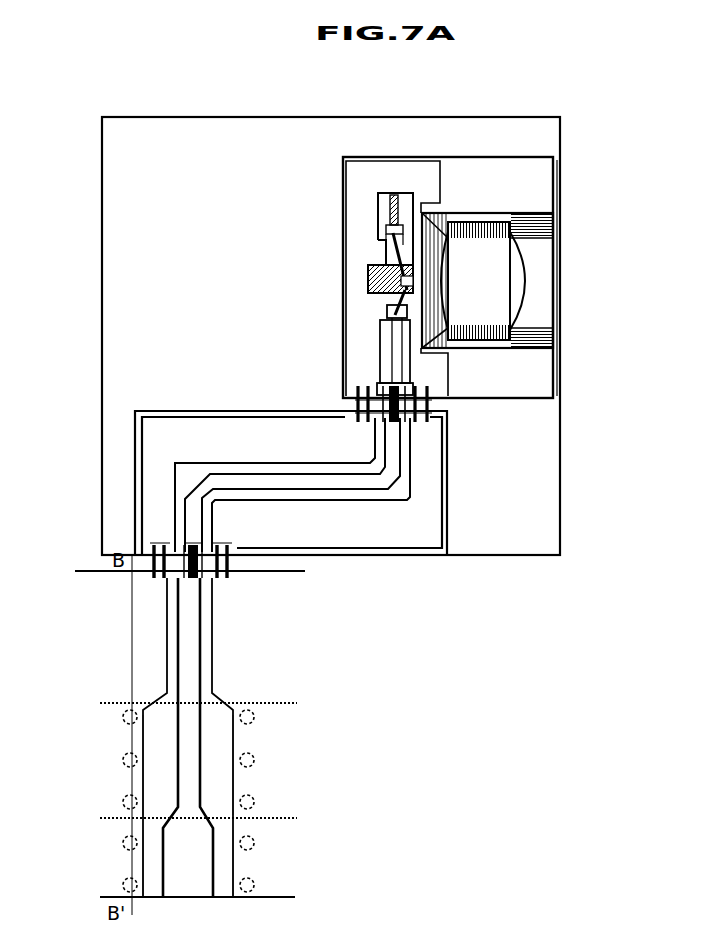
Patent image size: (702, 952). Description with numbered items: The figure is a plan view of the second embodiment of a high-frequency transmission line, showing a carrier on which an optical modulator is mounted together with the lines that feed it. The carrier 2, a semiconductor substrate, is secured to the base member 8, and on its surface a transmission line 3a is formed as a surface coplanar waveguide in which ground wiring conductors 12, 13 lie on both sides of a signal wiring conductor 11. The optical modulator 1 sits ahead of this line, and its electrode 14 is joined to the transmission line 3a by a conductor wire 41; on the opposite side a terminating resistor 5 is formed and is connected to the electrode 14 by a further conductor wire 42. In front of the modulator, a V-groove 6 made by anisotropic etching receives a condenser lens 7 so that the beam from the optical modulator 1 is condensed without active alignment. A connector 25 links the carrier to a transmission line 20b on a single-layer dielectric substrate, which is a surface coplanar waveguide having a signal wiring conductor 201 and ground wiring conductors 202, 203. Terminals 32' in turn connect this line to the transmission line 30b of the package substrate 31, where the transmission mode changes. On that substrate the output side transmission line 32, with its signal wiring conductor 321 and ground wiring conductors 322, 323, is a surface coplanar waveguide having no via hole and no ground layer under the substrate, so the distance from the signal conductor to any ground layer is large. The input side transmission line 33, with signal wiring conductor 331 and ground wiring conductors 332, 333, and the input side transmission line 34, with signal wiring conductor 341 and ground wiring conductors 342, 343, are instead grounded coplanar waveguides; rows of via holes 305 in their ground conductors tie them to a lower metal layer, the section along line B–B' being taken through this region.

The carrier 2 is at (473, 177).
The base member 8 is at (150, 271).
The terminating resistor 5 is at (381, 201).
The conductor wire 42 is at (388, 222).
The electrode 14 is at (386, 241).
The optical modulator 1 is at (392, 262).
The conductor wire 41 is at (367, 280).
The ground wiring conductor 13 is at (386, 308).
The signal wiring conductor 11 is at (381, 330).
The ground wiring conductor 12 is at (361, 364).
The transmission line 3a is at (334, 339).
The condenser lens 7 is at (532, 250).
The V-groove 6 is at (557, 290).
The connector 25 is at (372, 422).
The transmission line 20b is at (281, 444).
The ground wiring conductor 203 is at (267, 370).
The signal wiring conductor 201 is at (221, 487).
The ground wiring conductor 202 is at (243, 448).
The connector terminals 32' is at (130, 503).
The package substrate 31 is at (93, 571).
The transmission line 30b is at (187, 596).
The output side transmission line 32 is at (280, 737).
The ground wiring conductor 323 is at (220, 629).
The signal wiring conductor 321 is at (187, 657).
The ground wiring conductor 322 is at (145, 680).
The input side transmission line 33 is at (258, 759).
The ground wiring conductor 333 is at (243, 733).
The signal wiring conductor 331 is at (195, 758).
The ground wiring conductor 332 is at (137, 785).
The input side transmission line 34 is at (258, 856).
The ground wiring conductor 343 is at (243, 827).
The signal wiring conductor 341 is at (193, 857).
The ground wiring conductor 342 is at (137, 872).
The via hole 305 is at (124, 757).